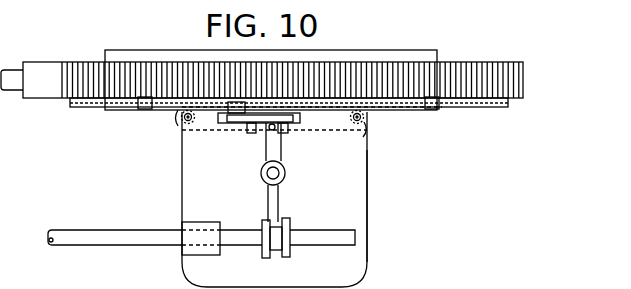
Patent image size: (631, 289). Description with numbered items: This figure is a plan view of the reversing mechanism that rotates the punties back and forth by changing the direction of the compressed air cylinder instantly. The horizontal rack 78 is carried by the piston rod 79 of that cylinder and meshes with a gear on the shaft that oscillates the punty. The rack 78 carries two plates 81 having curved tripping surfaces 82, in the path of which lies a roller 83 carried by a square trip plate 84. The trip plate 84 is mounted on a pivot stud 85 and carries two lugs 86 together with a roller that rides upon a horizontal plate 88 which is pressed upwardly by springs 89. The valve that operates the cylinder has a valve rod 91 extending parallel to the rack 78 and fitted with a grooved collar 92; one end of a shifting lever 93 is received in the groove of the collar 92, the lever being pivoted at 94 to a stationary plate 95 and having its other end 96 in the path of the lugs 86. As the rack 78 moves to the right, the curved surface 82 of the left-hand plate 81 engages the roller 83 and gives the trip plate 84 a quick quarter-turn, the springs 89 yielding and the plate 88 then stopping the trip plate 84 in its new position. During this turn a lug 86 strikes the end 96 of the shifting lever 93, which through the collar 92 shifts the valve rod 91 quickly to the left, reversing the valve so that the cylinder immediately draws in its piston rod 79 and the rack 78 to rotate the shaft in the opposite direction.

The horizontal rack 78 is at (87, 72).
The piston rod 79 is at (13, 86).
The plates 81 is at (84, 108).
The curved tripping surfaces 82 is at (145, 109).
The roller 83 is at (222, 105).
The square trip plate 84 is at (300, 118).
The pivot stud 85 is at (288, 140).
The lugs 86 is at (248, 126).
The horizontal plate 88 is at (367, 140).
The springs 89 is at (183, 123).
The valve rod 91 is at (107, 239).
The grooved collar 92 is at (285, 227).
The shifting lever 93 is at (270, 200).
The pivot 94 is at (284, 172).
The stationary plate 95 is at (362, 180).
The end of shifting lever 96 is at (269, 131).